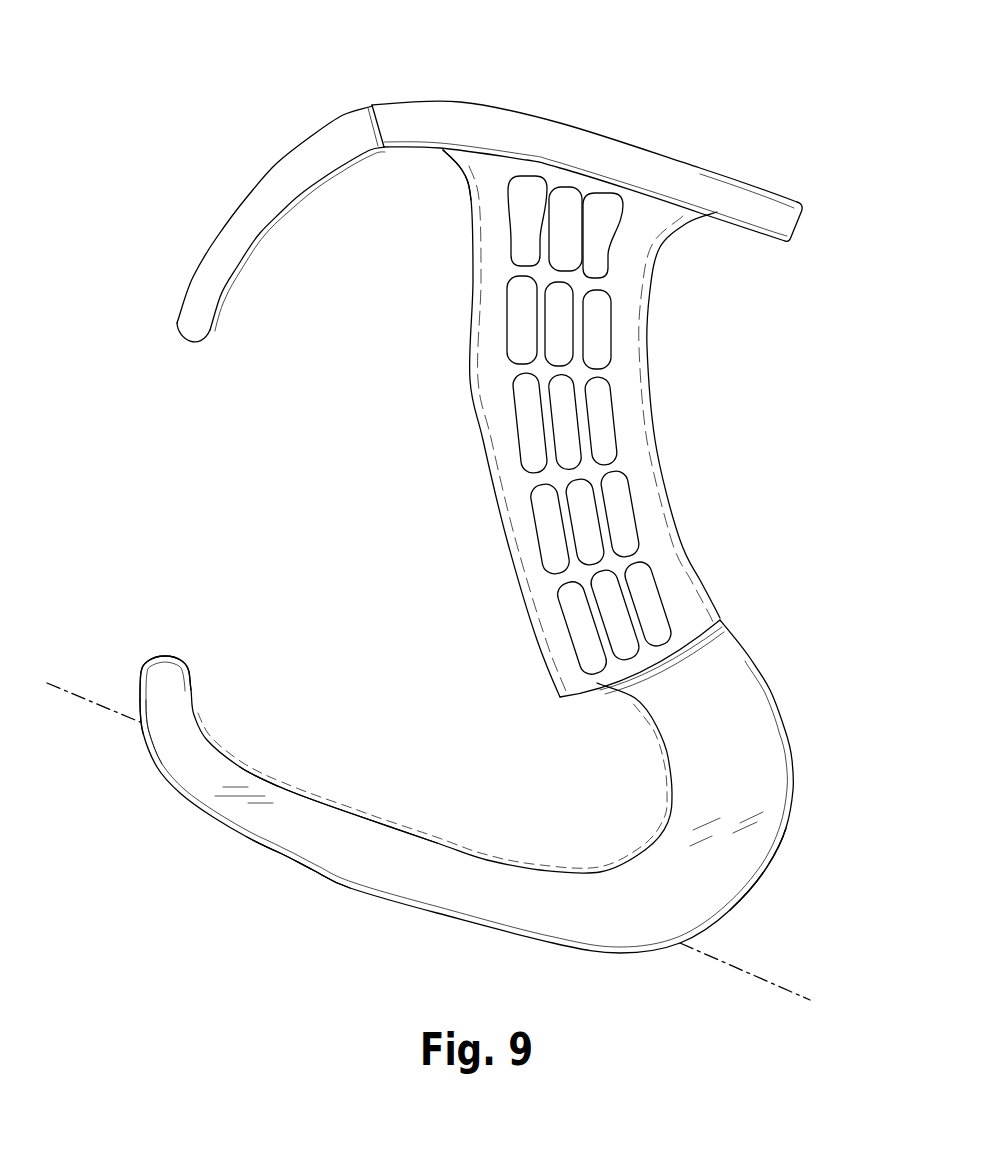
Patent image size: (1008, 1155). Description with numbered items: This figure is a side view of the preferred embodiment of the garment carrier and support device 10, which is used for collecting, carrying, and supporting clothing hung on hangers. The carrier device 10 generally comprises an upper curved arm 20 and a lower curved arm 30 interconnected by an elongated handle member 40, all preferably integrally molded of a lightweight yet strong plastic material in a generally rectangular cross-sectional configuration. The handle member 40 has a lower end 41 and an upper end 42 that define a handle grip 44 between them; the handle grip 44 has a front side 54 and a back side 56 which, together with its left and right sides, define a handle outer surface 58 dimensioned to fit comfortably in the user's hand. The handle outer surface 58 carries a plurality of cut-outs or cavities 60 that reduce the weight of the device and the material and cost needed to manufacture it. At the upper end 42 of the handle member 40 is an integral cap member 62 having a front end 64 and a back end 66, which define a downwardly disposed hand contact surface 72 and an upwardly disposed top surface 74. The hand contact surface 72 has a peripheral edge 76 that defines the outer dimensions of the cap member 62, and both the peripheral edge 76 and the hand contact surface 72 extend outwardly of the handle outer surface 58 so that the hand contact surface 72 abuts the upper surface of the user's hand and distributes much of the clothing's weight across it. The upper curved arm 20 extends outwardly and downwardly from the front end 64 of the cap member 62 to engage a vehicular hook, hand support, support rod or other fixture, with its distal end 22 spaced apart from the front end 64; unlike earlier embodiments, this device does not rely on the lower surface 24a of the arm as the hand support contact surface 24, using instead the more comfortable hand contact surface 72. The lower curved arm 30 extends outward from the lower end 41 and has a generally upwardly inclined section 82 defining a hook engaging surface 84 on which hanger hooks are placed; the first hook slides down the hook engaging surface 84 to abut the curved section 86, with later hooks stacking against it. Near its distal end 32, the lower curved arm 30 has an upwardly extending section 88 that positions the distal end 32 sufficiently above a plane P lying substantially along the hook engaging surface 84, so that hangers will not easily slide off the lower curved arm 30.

The garment carrier and support device 10 is at (790, 338).
The upper curved arm 20 is at (236, 207).
The distal end of upper curved arm 22 is at (182, 330).
The hand support contact surface 24 is at (228, 292).
The lower surface 24a is at (282, 224).
The lower curved arm 30 is at (459, 786).
The distal end of lower curved arm 32 is at (172, 664).
The elongated handle member 40 is at (578, 439).
The lower end of handle member 41 is at (550, 704).
The upper end of handle member 42 is at (440, 172).
The handle grip 44 is at (650, 492).
The front side of handle grip 54 is at (462, 360).
The back side of handle grip 56 is at (665, 411).
The handle outer surface 58 is at (528, 566).
The cut-outs or cavities 60 is at (640, 598).
The cap member 62 is at (622, 154).
The front end of cap member 64 is at (380, 92).
The back end of cap member 66 is at (812, 192).
The hand contact surface 72 is at (735, 228).
The top surface 74 is at (668, 146).
The peripheral edge 76 is at (748, 177).
The upwardly inclined section 82 is at (283, 828).
The hook engaging surface 84 is at (373, 808).
The curved section 86 is at (728, 900).
The upwardly extending section 88 is at (163, 738).
The plane P is at (88, 688).